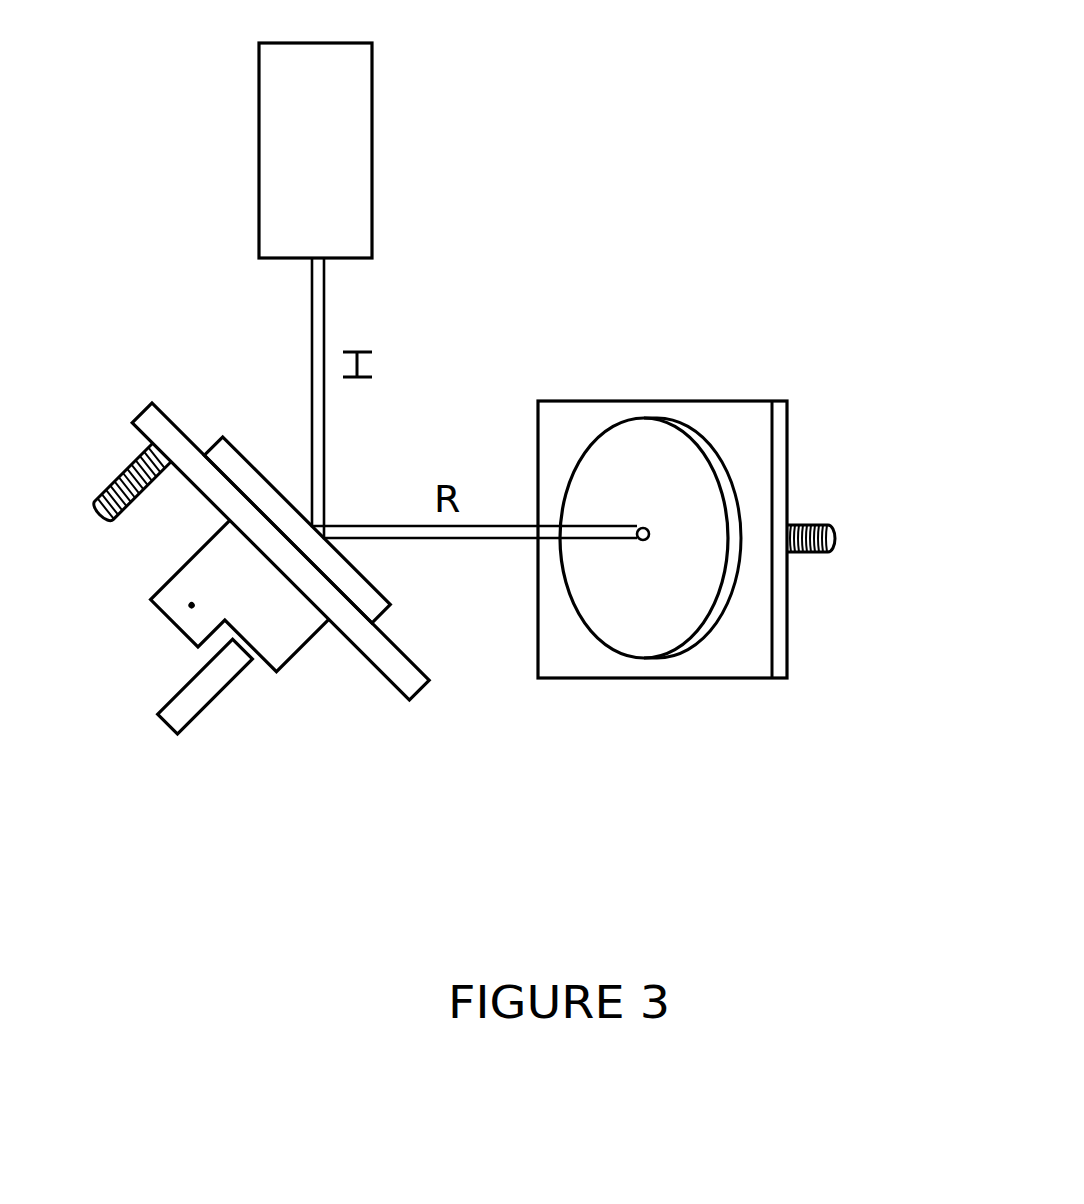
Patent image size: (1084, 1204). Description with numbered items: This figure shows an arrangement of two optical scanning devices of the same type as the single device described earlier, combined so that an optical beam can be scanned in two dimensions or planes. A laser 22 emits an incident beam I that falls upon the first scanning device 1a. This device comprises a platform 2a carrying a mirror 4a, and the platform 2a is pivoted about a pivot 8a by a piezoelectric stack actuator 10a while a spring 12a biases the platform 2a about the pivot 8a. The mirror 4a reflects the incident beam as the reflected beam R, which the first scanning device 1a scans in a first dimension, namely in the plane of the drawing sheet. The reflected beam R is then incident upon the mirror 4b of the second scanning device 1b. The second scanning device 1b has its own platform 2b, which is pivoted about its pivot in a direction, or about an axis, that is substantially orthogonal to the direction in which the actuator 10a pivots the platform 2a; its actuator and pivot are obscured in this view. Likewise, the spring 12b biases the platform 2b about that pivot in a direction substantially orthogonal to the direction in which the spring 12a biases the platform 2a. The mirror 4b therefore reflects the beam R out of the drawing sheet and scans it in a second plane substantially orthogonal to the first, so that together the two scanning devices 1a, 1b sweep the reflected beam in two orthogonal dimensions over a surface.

The laser 22 is at (384, 188).
The first scanning device 1a is at (148, 376).
The platform 2a is at (298, 628).
The mirror 4a is at (382, 611).
The pivot 8a is at (186, 614).
The piezoelectric stack actuator 10a is at (190, 710).
The spring 12a is at (116, 478).
The second scanning device 1b is at (770, 357).
The platform 2b is at (747, 670).
The mirror 4b is at (642, 650).
The spring 12b is at (824, 560).